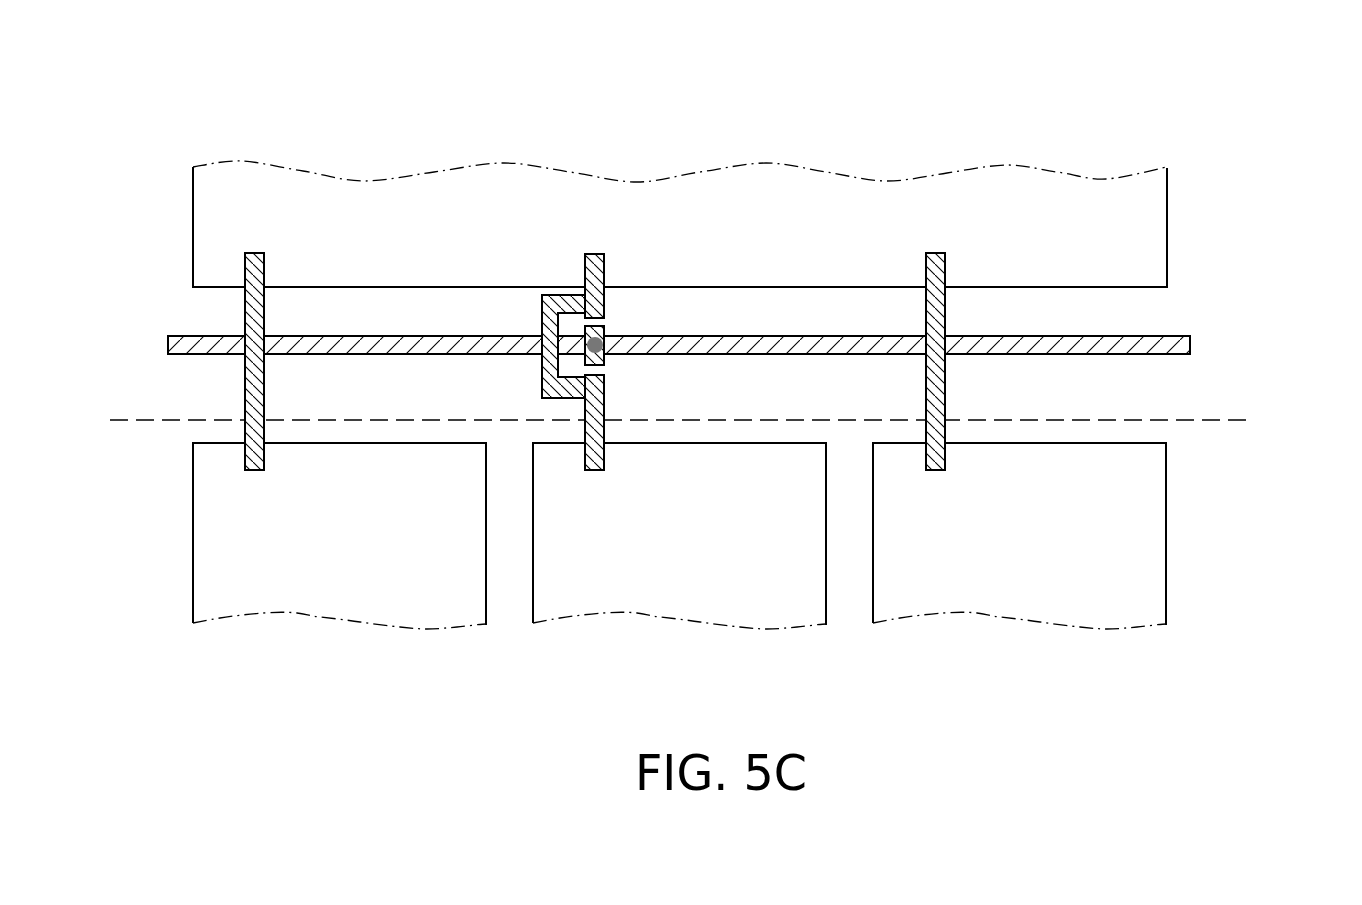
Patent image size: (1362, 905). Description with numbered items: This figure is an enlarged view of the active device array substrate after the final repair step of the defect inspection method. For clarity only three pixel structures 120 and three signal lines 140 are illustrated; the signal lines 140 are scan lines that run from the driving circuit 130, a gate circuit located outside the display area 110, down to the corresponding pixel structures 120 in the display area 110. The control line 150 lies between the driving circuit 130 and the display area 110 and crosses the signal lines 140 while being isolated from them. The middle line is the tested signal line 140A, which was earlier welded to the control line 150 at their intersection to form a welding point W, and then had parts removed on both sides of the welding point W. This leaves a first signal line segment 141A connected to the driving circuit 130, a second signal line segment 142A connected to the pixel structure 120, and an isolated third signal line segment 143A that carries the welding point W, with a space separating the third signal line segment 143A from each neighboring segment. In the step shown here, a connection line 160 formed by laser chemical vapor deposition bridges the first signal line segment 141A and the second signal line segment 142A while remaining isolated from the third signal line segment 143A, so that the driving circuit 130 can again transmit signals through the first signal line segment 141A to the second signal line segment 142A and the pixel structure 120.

The display area 110 is at (1219, 487).
The pixel structure 120 is at (319, 595).
The driving circuit 130 is at (1145, 245).
The signal line 140 is at (256, 379).
The tested signal line 140A is at (632, 255).
The first signal line segment 141A is at (587, 266).
The second signal line segment 142A is at (597, 462).
The third signal line segment 143A is at (607, 330).
The control line 150 is at (1175, 337).
The connection line 160 is at (541, 375).
The welding point W is at (604, 345).